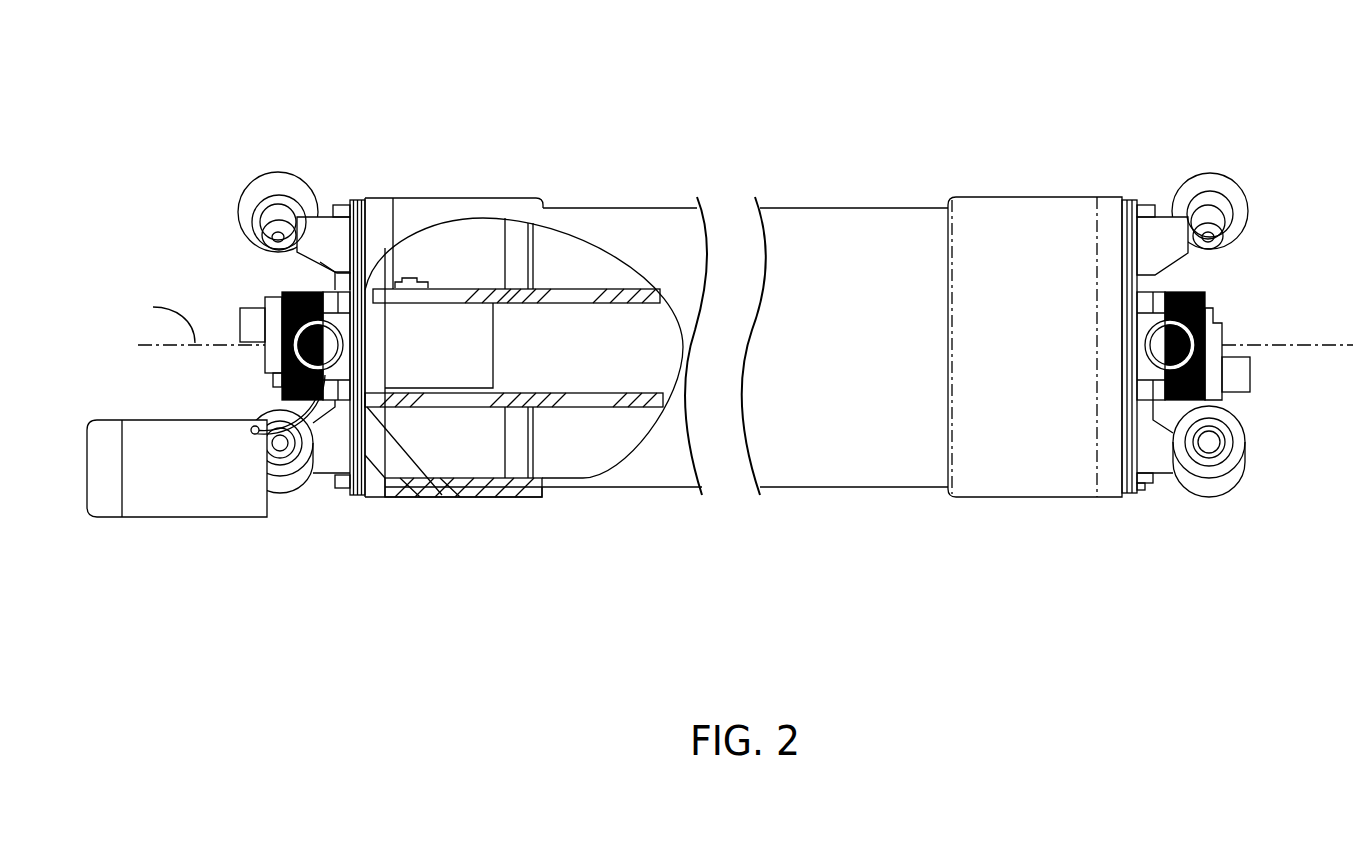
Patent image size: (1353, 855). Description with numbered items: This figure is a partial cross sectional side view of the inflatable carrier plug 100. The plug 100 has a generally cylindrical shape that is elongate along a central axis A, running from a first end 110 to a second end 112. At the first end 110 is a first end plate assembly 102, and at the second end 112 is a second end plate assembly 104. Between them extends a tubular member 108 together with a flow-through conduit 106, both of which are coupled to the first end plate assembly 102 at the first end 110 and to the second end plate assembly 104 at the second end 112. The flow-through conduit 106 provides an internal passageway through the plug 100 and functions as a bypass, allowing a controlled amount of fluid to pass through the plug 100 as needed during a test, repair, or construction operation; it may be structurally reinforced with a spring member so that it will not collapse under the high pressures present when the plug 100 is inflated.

The plug 100 is at (957, 110).
The first end plate assembly 102 is at (347, 203).
The second end plate assembly 104 is at (1138, 197).
The flow-through conduit 106 is at (483, 287).
The tubular member 108 is at (775, 203).
The first end 110 is at (377, 498).
The second end 112 is at (1112, 498).